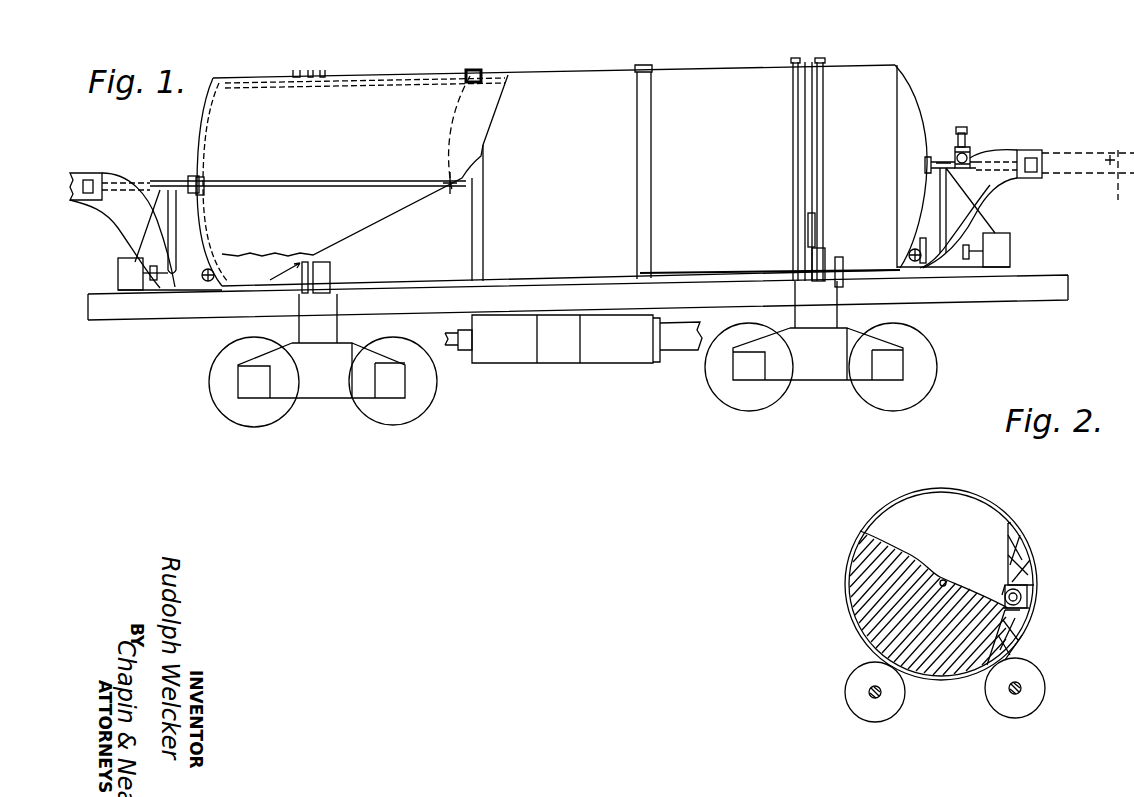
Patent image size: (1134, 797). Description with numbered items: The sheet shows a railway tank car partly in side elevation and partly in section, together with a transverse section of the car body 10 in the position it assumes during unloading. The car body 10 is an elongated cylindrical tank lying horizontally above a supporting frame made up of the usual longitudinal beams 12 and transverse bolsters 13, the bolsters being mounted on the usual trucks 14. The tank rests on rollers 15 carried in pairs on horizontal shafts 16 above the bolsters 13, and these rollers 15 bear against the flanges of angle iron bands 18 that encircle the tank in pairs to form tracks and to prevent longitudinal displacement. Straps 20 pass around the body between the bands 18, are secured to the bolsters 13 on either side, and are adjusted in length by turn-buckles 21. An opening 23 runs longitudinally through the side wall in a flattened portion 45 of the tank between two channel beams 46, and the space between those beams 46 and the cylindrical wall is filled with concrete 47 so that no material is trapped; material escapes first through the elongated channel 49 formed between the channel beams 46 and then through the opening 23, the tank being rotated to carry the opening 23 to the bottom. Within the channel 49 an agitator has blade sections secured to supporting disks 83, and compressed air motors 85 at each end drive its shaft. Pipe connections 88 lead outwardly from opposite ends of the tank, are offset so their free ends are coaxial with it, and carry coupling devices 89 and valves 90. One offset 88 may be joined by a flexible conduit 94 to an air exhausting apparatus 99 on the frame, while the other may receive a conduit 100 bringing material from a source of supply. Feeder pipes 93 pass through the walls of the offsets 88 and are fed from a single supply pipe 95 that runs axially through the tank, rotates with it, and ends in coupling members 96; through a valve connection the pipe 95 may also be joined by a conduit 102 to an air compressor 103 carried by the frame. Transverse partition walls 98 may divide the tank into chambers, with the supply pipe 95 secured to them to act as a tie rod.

In FIG. 1, the car body 10 is at (698, 80).
In FIG. 2, the car body 10 is at (946, 489).
In FIG. 1, the longitudinal beams 12 is at (575, 298).
In FIG. 1, the bolsters 13 is at (568, 312).
In FIG. 1, the trucks 14 is at (573, 375).
In FIG. 1, the rollers 15 is at (808, 262).
In FIG. 2, the rollers 15 is at (865, 710).
In FIG. 1, the horizontal shafts 16 is at (747, 272).
In FIG. 2, the horizontal shafts 16 is at (879, 695).
In FIG. 1, the angle iron bands 18 is at (293, 72).
In FIG. 1, the straps 20 is at (316, 72).
In FIG. 1, the turn-buckles 21 is at (815, 232).
In FIG. 2, the opening 23 is at (1028, 600).
In FIG. 2, the flattened portion 45 is at (1027, 588).
In FIG. 2, the channel beams 46 is at (1022, 611).
In FIG. 2, the concrete 47 is at (1030, 557).
In FIG. 2, the channel 49 is at (1003, 595).
In FIG. 1, the supporting disks 83 is at (172, 238).
In FIG. 1, the compressed air motors 85 is at (121, 260).
In FIG. 1, the pipe connections 88 is at (140, 195).
In FIG. 1, the coupling devices 89 is at (84, 173).
In FIG. 1, the valves 90 is at (207, 283).
In FIG. 1, the feeder pipes 93 is at (942, 185).
In FIG. 1, the flexible conduit 94 is at (680, 335).
In FIG. 1, the supply pipe 95 is at (298, 178).
In FIG. 2, the supply pipe 95 is at (945, 580).
In FIG. 1, the coupling members 96 is at (100, 182).
In FIG. 1, the partition walls 98 is at (448, 124).
In FIG. 1, the air exhausting apparatus 99 is at (611, 348).
In FIG. 1, the conduit 100 is at (972, 154).
In FIG. 1, the conduit 102 is at (84, 200).
In FIG. 1, the air compressor 103 is at (528, 348).